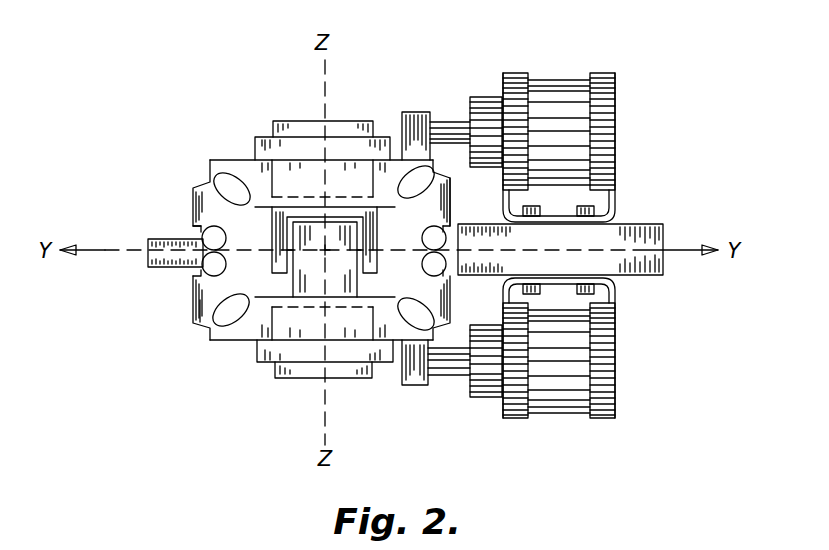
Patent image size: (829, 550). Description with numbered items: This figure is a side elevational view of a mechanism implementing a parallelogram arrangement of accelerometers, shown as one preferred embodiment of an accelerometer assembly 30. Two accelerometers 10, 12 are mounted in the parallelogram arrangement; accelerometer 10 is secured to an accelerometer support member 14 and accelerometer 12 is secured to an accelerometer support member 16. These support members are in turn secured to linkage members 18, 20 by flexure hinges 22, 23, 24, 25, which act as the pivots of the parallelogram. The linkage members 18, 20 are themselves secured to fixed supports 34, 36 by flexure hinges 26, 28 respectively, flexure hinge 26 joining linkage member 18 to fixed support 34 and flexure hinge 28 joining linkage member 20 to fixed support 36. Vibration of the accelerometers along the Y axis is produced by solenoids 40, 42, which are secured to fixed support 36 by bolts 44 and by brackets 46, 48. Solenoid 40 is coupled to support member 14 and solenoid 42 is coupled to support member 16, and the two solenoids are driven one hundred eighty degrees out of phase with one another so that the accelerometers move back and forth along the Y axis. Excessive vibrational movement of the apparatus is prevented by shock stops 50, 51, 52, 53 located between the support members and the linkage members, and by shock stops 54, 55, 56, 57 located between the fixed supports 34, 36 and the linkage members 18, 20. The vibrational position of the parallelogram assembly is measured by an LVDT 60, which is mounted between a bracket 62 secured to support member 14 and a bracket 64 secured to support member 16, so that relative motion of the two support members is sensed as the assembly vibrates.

The accelerometer 10 is at (258, 138).
The accelerometer 12 is at (262, 372).
The accelerometer support member 14 is at (236, 165).
The accelerometer support member 16 is at (221, 343).
The linkage member 18 is at (200, 202).
The linkage member 20 is at (440, 196).
The flexure hinge 22 is at (203, 172).
The flexure hinge 23 is at (440, 197).
The flexure hinge 24 is at (213, 327).
The flexure hinge 25 is at (450, 380).
The flexure hinge 26 is at (206, 290).
The flexure hinge 28 is at (448, 237).
The accelerometer assembly 30 is at (174, 101).
The fixed support 34 is at (148, 243).
The fixed support 36 is at (665, 228).
The solenoid 40 is at (557, 88).
The solenoid 42 is at (566, 402).
The bolts 44 is at (545, 206).
The bracket 46 is at (612, 124).
The bracket 48 is at (614, 357).
The shock stop 50 is at (198, 212).
The shock stop 51 is at (393, 200).
The shock stop 52 is at (215, 332).
The shock stop 53 is at (378, 272).
The shock stop 54 is at (198, 237).
The shock stop 55 is at (197, 270).
The shock stop 56 is at (446, 226).
The shock stop 57 is at (450, 272).
The LVDT 60 is at (316, 276).
The bracket 62 is at (348, 215).
The bracket 64 is at (343, 287).